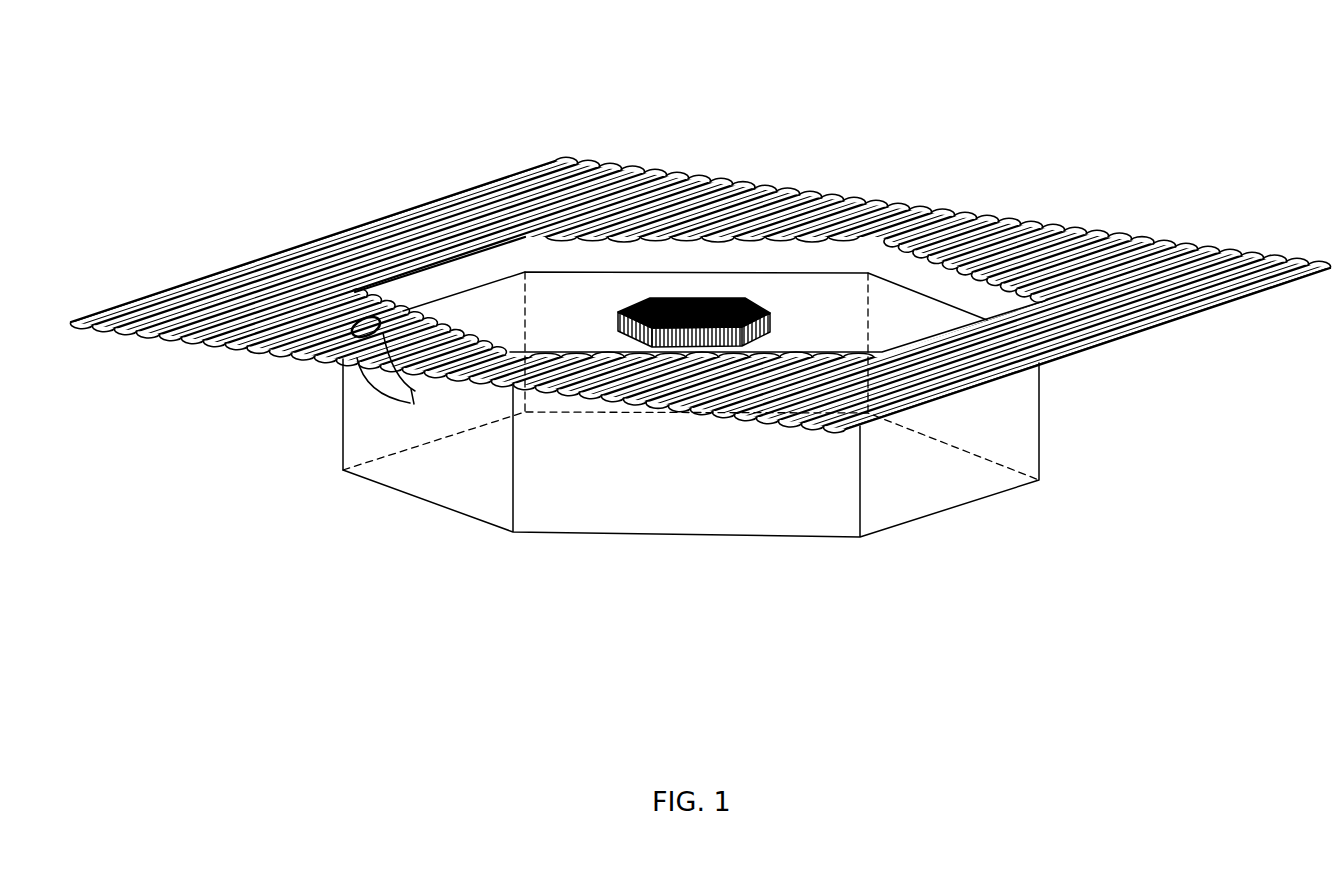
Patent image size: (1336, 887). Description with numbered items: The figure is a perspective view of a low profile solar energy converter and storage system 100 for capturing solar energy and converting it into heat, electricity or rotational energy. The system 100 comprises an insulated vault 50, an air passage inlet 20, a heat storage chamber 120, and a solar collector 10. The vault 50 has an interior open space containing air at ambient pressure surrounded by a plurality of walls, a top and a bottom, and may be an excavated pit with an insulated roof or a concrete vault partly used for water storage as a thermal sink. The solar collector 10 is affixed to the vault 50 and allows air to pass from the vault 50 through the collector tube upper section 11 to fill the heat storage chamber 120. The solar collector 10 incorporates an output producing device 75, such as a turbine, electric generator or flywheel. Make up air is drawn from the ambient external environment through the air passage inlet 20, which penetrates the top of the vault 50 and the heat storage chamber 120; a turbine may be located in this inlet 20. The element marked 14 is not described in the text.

The low profile solar energy converter and storage system 100 is at (790, 160).
The heat storage chamber 120 is at (653, 252).
The insulated vault 50 is at (1008, 432).
The solar collector 10 is at (664, 368).
The air passage inlet 20 is at (653, 300).
The collector tube upper top section 11 is at (633, 333).
The output producing device 75 is at (427, 408).
The cable connector 14 is at (423, 399).